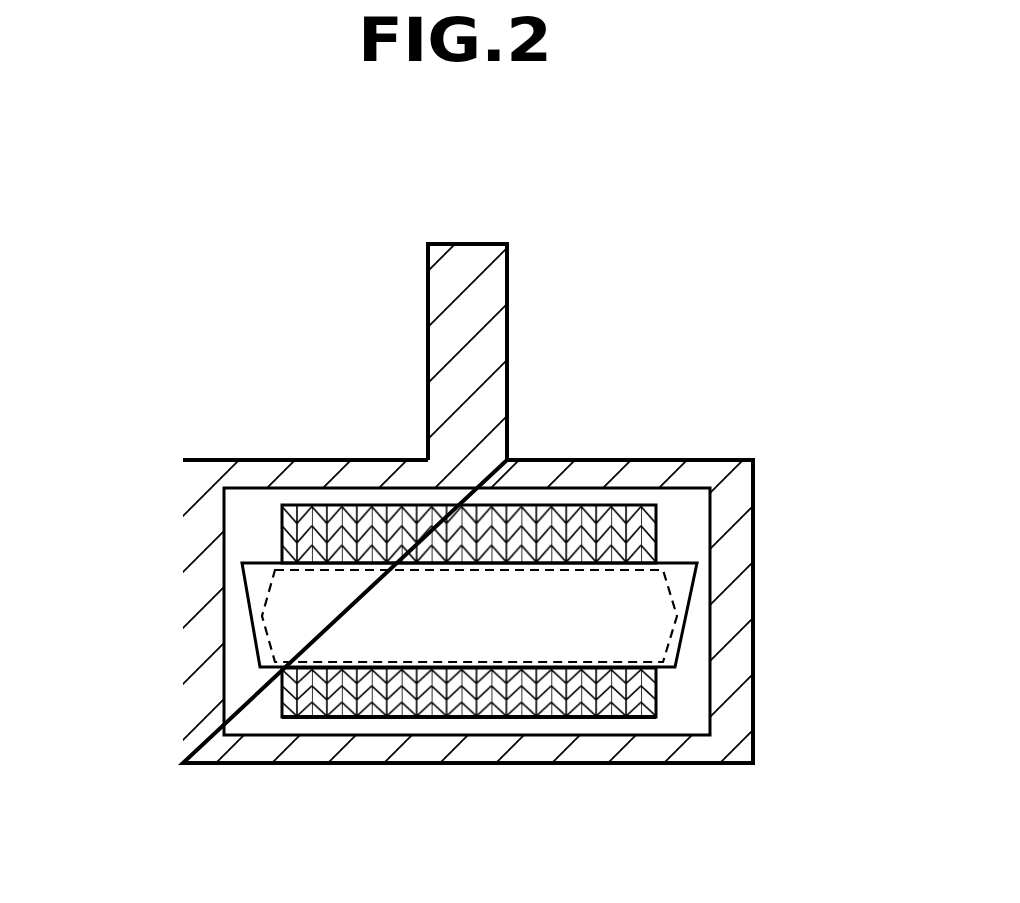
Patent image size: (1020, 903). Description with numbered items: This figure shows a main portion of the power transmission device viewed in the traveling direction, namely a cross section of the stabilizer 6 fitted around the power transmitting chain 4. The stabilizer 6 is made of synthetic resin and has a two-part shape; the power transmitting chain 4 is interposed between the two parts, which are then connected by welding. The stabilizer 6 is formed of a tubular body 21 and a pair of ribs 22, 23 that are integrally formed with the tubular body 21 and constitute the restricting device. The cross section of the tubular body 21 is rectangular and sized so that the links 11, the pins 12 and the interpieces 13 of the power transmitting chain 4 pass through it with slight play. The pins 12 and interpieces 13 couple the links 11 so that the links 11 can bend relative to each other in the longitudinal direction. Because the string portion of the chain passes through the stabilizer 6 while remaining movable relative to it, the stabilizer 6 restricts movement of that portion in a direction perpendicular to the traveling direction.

The power transmitting chain 4 is at (533, 715).
The stabilizer 6 is at (450, 555).
The link 11 is at (355, 723).
The pin 12 is at (260, 667).
The interpiece 13 is at (470, 632).
The tubular body 21 is at (183, 628).
The rib 22 is at (507, 317).
The rib 23 is at (467, 272).